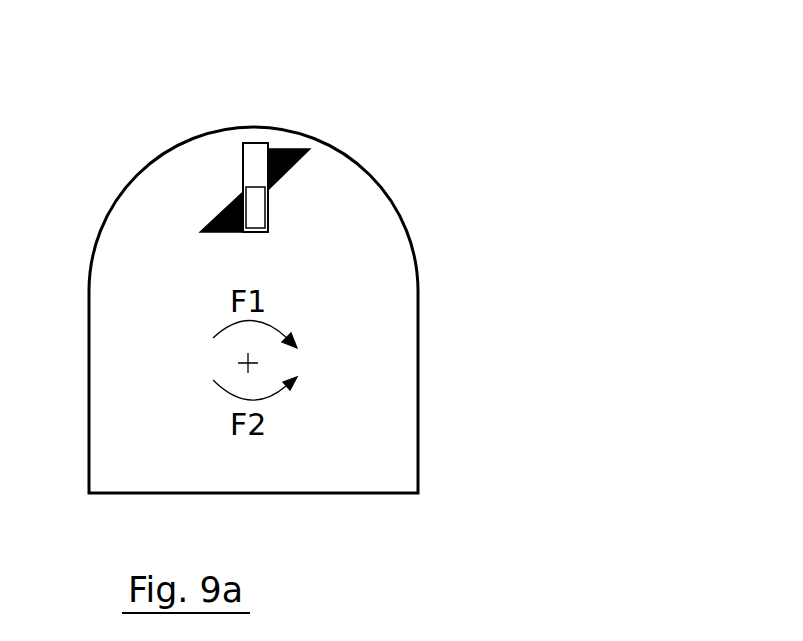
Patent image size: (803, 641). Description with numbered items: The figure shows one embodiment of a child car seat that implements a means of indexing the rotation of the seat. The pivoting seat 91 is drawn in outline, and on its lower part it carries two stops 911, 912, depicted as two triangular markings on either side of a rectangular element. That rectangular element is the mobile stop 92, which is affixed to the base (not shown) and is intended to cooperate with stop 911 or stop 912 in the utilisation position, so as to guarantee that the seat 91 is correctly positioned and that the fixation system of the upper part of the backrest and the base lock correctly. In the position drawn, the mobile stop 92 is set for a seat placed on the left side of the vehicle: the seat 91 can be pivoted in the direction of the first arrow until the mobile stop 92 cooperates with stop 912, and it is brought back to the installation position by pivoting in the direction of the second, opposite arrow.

The pivoting seat 91 is at (387, 194).
The mobile stop 92 is at (268, 213).
The stop 911 is at (288, 147).
The stop 912 is at (217, 212).